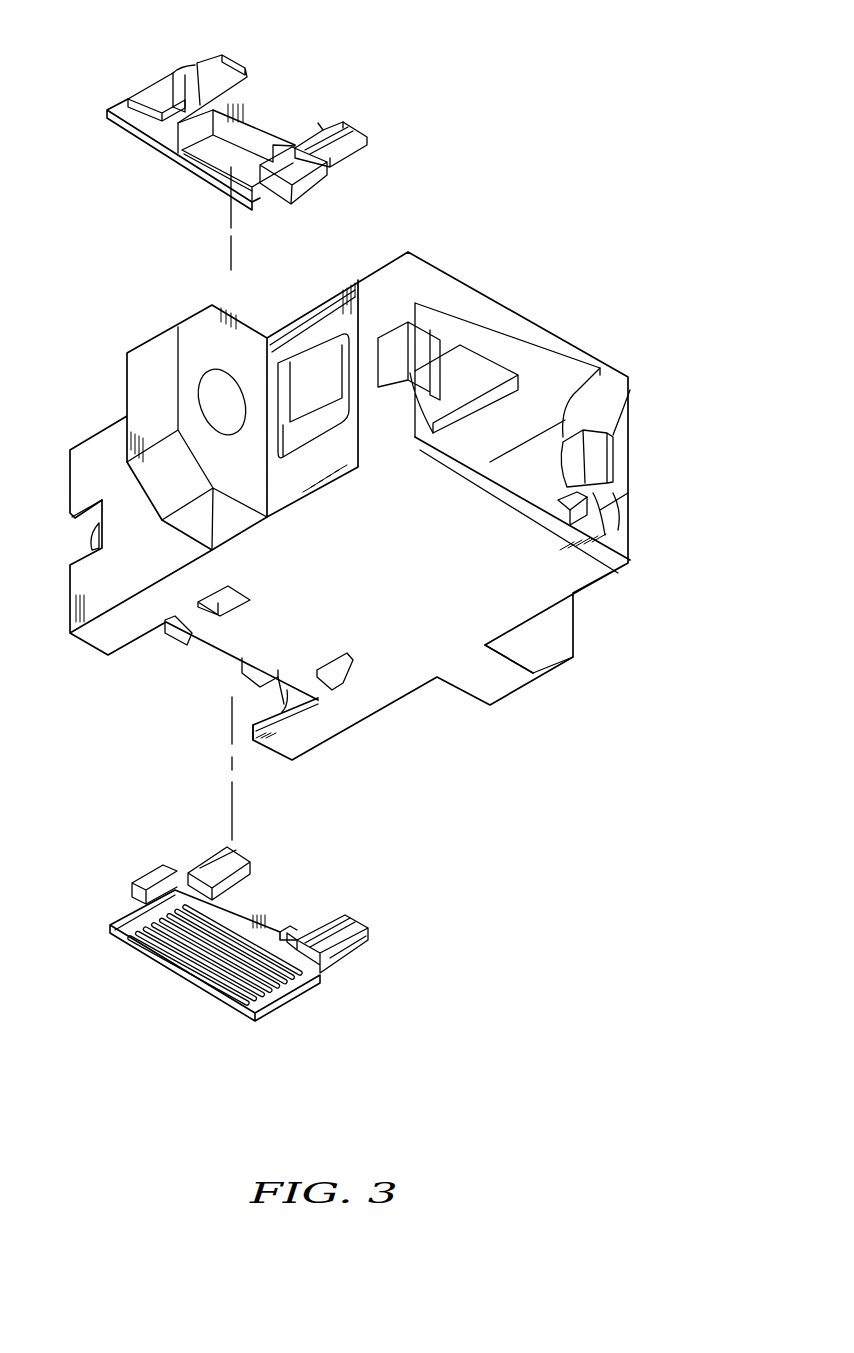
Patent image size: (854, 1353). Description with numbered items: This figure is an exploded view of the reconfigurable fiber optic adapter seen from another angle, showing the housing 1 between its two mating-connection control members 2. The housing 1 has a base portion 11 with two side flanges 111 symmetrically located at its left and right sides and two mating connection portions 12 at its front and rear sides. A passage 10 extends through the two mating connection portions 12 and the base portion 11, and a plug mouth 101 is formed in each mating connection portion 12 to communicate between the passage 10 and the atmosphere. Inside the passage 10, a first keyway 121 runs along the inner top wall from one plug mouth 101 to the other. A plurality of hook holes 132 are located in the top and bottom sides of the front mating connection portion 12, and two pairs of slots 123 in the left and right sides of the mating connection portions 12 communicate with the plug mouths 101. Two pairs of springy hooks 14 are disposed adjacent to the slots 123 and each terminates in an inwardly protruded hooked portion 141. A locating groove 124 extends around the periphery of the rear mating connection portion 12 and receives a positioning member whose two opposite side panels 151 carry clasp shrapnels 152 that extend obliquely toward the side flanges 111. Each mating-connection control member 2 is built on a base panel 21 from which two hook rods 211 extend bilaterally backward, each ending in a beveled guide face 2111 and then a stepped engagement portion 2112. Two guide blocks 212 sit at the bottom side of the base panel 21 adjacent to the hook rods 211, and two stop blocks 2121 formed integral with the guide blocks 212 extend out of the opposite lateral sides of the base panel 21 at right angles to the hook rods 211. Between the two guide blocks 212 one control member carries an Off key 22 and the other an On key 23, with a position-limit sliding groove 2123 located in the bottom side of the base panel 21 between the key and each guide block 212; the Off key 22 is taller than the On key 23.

The housing 1 is at (356, 502).
The passage 10 is at (508, 418).
The plug mouth 101 is at (605, 527).
The base portion 11 is at (395, 627).
The side flange 111 is at (135, 375).
The mating connection portion 12 is at (83, 450).
The first keyway 121 is at (477, 377).
The slot 123 is at (590, 512).
The locating groove 124 is at (278, 517).
The hook hole 132 is at (212, 608).
The springy hook 14 is at (630, 383).
The hooked portion 141 is at (578, 453).
The side panel 151 is at (327, 315).
The clasp shrapnel 152 is at (305, 373).
The mating-connection control member 2 is at (247, 522).
The base panel 21 is at (143, 134).
The hook rod 211 is at (337, 155).
The beveled guide face 2111 is at (330, 122).
The stepped engagement portion 2112 is at (320, 118).
The guide block 212 is at (302, 190).
The stop block 2121 is at (145, 98).
The position-limit sliding groove 2123 is at (190, 110).
The Off key 22 is at (197, 163).
The On key 23 is at (242, 910).